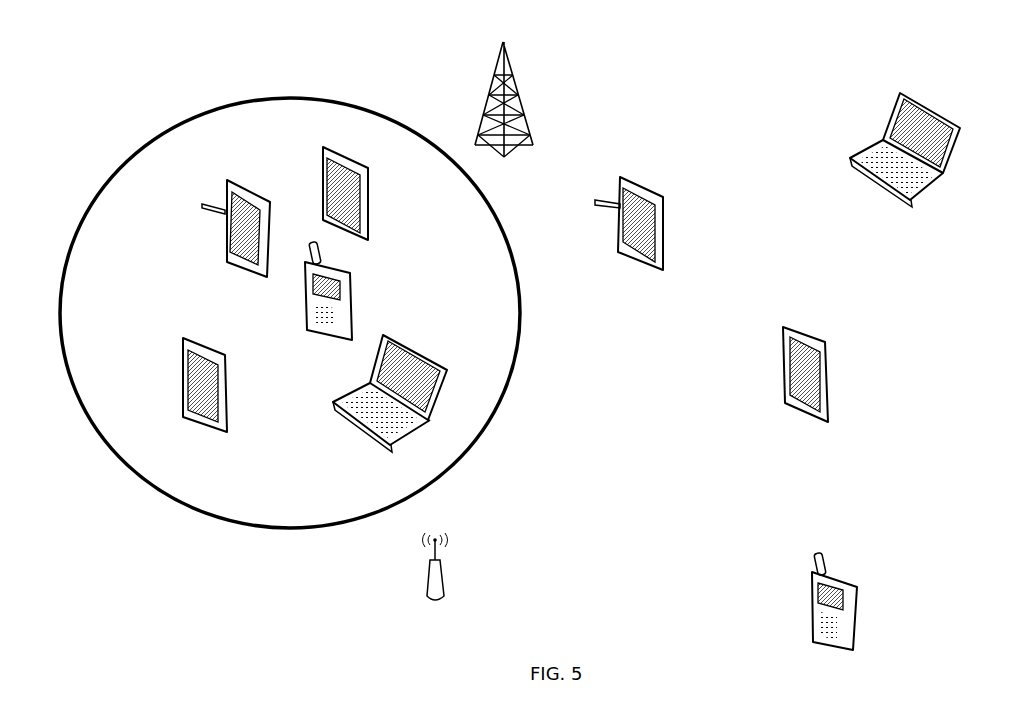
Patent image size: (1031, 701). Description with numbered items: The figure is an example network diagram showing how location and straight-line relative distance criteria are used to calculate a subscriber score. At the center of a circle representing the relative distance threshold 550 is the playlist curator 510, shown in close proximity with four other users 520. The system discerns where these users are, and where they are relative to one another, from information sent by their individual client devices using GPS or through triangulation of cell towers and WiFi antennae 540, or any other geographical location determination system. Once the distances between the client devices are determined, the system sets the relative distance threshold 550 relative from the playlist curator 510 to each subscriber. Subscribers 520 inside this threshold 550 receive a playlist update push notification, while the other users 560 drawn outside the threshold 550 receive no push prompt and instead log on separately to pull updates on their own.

The playlist curator 510 is at (228, 268).
The users 520 is at (370, 192).
The WiFi antennae 540 is at (443, 552).
The relative distance threshold 550 is at (381, 117).
The other users 560 is at (665, 258).